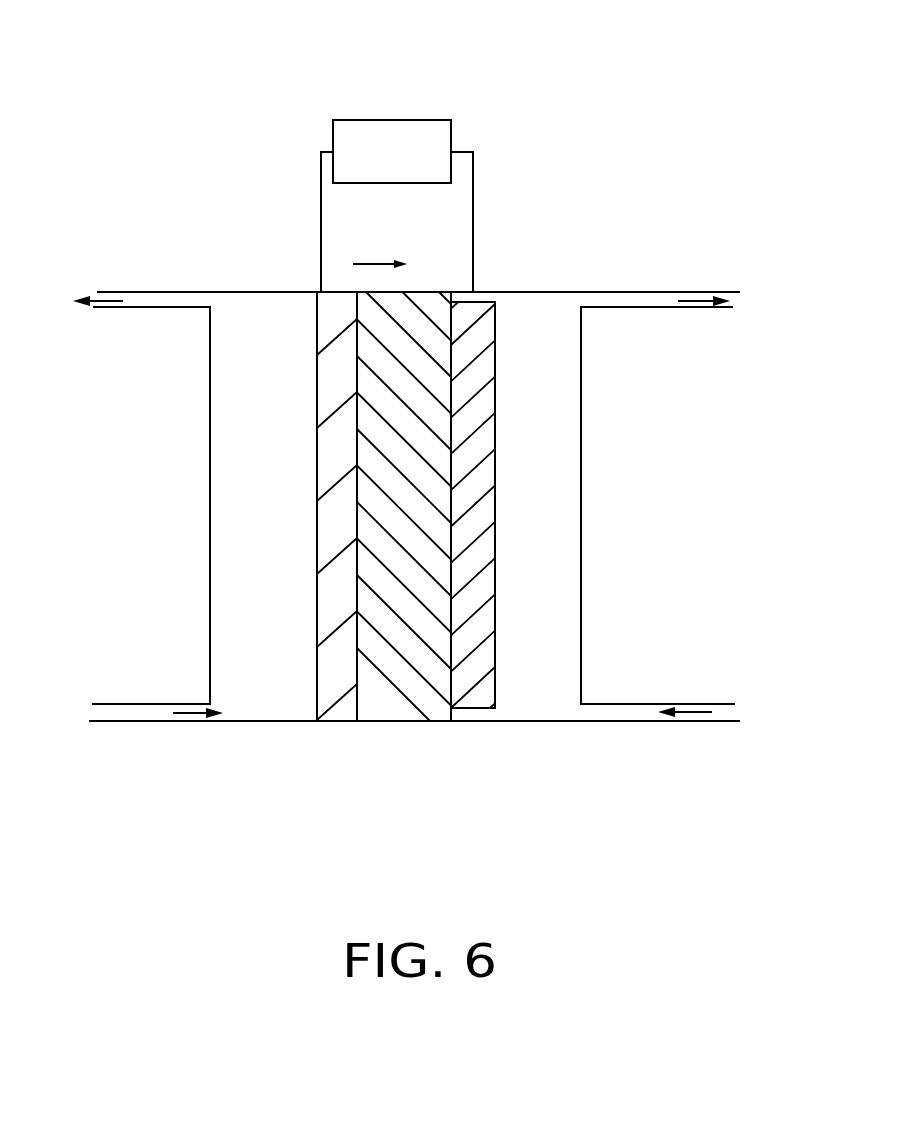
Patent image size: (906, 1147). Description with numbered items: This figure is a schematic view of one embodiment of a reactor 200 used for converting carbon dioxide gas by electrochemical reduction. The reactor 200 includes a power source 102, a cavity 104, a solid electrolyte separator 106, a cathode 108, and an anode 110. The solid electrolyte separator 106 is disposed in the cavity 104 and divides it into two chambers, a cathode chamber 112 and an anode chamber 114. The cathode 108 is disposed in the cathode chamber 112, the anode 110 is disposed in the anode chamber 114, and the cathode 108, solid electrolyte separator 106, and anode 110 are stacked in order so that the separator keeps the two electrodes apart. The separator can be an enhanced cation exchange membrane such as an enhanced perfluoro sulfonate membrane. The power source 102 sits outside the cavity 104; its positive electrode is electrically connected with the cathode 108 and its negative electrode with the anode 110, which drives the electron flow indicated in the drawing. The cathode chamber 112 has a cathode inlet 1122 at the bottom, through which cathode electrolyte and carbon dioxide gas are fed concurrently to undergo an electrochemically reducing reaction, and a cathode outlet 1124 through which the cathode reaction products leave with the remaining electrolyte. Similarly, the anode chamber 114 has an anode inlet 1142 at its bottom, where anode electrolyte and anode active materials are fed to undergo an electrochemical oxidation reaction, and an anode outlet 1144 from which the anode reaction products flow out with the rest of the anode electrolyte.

The reactor 200 is at (270, 45).
The power source 102 is at (412, 120).
The cavity 104 is at (567, 643).
The solid electrolyte separator 106 is at (402, 677).
The cathode 108 is at (475, 418).
The anode 110 is at (342, 688).
The cathode chamber 112 is at (540, 486).
The anode chamber 114 is at (245, 473).
The cathode inlet 1122 is at (712, 713).
The cathode outlet 1124 is at (693, 302).
The anode inlet 1142 is at (140, 713).
The anode outlet 1144 is at (115, 303).